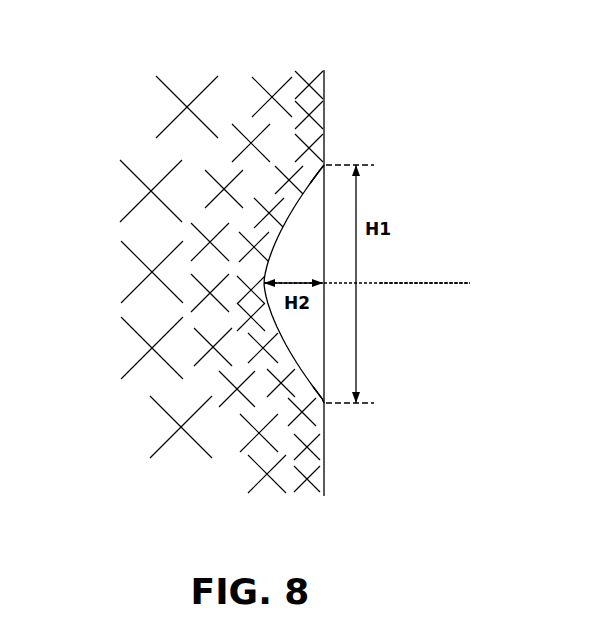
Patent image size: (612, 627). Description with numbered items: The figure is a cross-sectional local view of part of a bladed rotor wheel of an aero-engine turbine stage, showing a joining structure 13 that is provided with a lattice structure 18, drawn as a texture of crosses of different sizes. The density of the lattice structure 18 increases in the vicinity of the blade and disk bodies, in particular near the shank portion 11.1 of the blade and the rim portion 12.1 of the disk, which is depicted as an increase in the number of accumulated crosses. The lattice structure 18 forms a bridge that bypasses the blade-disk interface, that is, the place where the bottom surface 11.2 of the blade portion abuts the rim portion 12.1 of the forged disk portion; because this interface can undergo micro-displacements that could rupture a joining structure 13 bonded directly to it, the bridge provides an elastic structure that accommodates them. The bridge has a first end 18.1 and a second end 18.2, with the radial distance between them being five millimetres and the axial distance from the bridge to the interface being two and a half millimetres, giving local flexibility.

The joining structure 13 is at (112, 86).
The shank portion 11.1 is at (434, 158).
The bottom surface 11.2 is at (446, 276).
The rim portion 12.1 is at (432, 291).
The lattice structure 18 is at (218, 400).
The first end 18.1 is at (324, 165).
The second end 18.2 is at (324, 403).